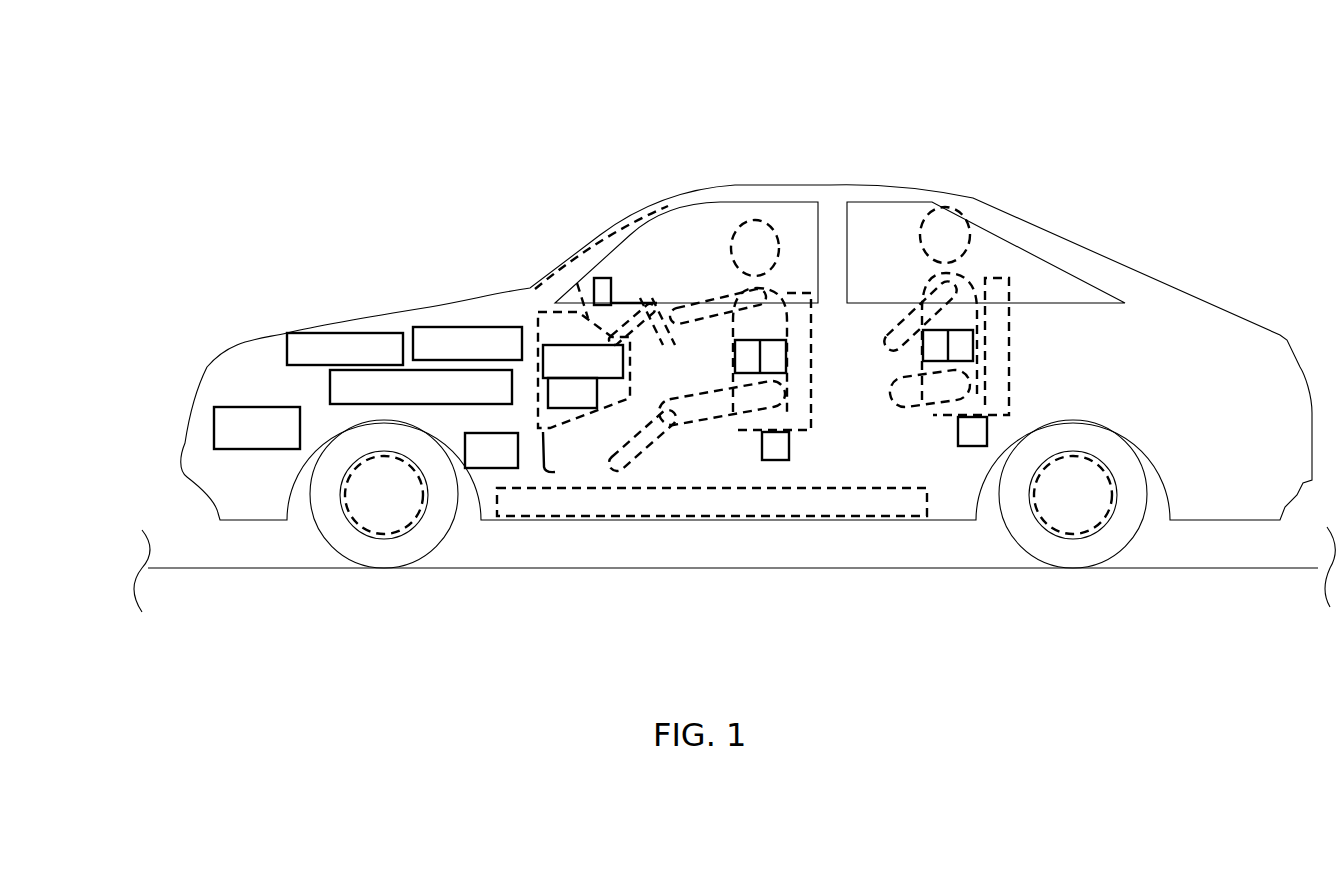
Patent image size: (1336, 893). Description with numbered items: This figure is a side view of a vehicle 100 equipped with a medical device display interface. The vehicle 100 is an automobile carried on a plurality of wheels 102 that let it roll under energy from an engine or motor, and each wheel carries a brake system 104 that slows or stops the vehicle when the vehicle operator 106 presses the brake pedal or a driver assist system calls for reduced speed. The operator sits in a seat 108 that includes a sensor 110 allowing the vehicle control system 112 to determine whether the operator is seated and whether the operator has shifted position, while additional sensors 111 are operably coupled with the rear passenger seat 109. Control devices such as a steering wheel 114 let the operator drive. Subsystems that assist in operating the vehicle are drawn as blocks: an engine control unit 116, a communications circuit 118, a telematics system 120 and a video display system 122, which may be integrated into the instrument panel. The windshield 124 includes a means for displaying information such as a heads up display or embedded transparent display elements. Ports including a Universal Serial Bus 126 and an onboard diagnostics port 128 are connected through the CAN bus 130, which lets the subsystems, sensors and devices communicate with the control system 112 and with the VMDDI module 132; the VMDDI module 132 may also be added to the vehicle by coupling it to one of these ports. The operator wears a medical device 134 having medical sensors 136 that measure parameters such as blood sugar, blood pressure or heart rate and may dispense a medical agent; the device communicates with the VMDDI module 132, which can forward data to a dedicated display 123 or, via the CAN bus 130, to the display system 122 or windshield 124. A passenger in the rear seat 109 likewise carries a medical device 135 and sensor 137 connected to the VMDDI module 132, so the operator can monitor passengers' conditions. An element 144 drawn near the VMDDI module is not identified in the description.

The vehicle 100 is at (1034, 130).
The wheels 102 is at (443, 541).
The brake system 104 is at (357, 522).
The vehicle operator 106 is at (776, 221).
The seat 108 is at (812, 402).
The passenger seat 109 is at (1010, 337).
The sensor 110 is at (791, 450).
The additional sensors 111 is at (958, 430).
The vehicle control system 112 is at (460, 327).
The steering wheel 114 is at (639, 293).
The engine control unit 116 is at (226, 408).
The communications circuit 118 is at (330, 386).
The telematics system 120 is at (287, 347).
The video display system 122 is at (577, 283).
The dedicated display 123 is at (606, 278).
The windshield 124 is at (613, 247).
The Universal Serial Bus (USB) port 126 is at (570, 407).
The onboard diagnostics port (ODP) 128 is at (513, 434).
The CAN bus 130 is at (902, 488).
The VMDDI module 132 is at (535, 345).
The wearable medical device 134 is at (787, 358).
The medical device 135 is at (975, 343).
The medical sensors 136 is at (735, 358).
The sensor 137 is at (923, 345).
The power connection 144 is at (573, 463).